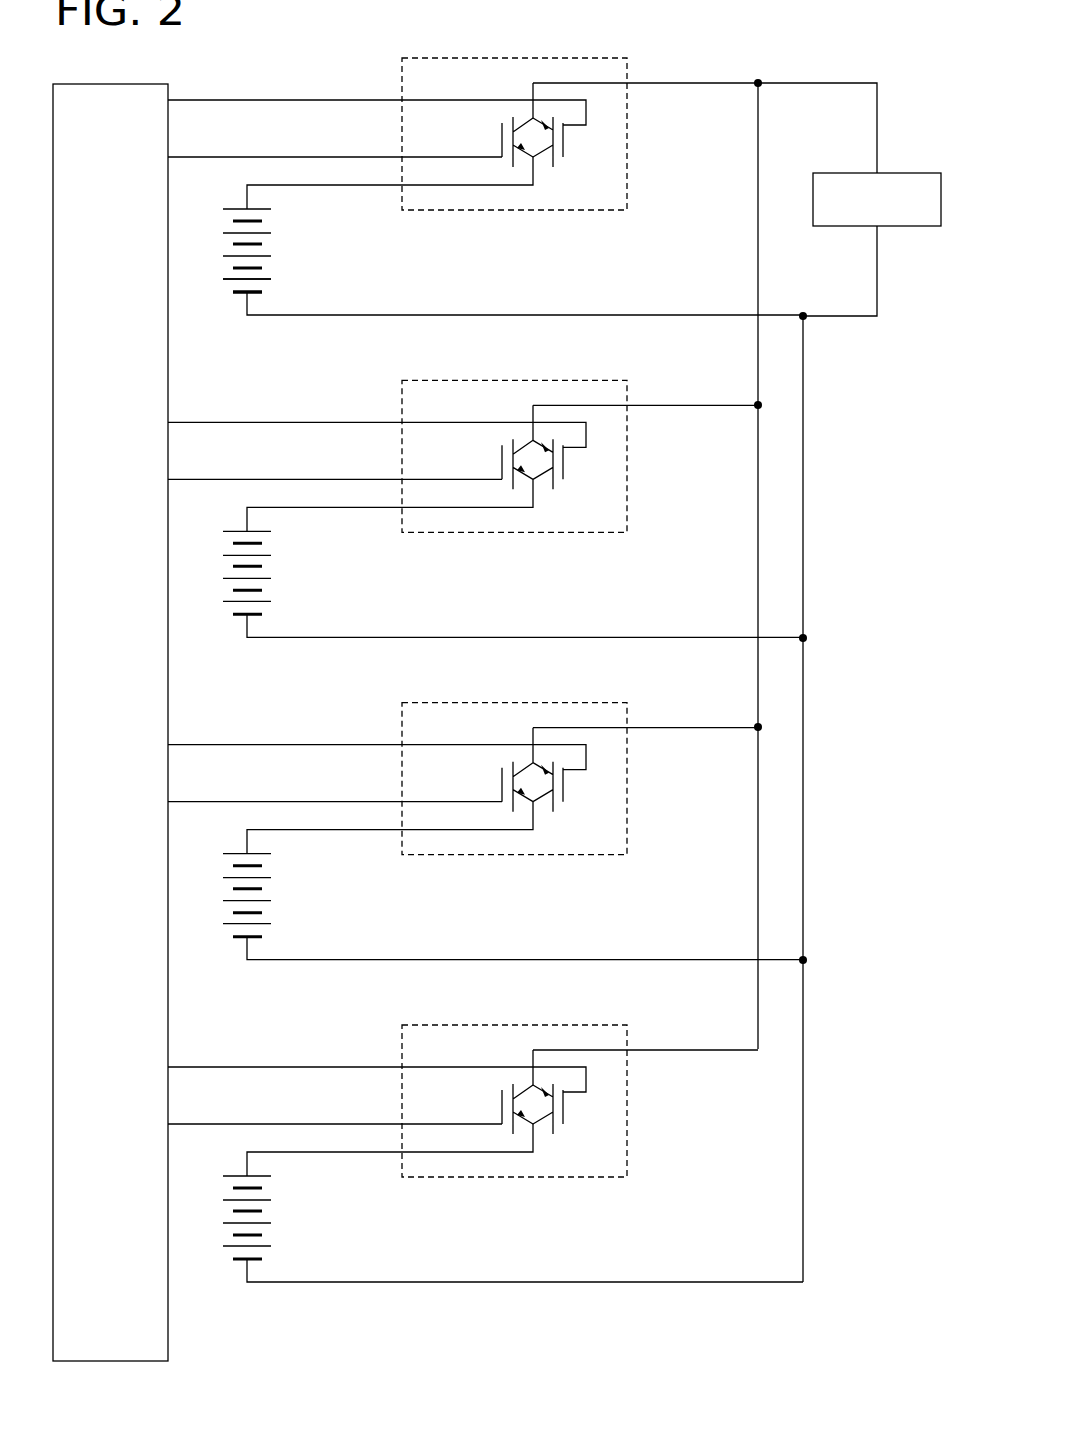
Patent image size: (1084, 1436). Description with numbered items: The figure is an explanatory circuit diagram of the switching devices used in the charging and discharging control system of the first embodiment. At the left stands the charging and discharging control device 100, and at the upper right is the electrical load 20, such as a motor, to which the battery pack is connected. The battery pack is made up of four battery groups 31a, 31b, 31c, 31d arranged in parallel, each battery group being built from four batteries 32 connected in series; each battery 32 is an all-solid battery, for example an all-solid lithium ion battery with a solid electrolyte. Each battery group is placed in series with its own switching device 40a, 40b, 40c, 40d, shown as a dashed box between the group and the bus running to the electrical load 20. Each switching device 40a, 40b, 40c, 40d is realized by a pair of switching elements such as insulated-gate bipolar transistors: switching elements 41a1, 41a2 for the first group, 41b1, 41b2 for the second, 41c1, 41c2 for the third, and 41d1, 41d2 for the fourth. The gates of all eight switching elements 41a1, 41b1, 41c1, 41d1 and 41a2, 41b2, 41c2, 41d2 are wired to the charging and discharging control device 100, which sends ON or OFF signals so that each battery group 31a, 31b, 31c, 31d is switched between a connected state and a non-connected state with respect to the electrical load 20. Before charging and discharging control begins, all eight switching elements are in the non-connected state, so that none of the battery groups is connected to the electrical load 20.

The charging and discharging control device 100 is at (100, 84).
The electrical load 20 is at (900, 173).
The battery 32 is at (218, 276).
The battery group 31a is at (278, 263).
The battery group 31b is at (274, 566).
The battery group 31c is at (274, 889).
The battery group 31d is at (274, 1211).
The switching device 40a is at (527, 58).
The switching device 40b is at (514, 441).
The switching device 40c is at (514, 764).
The switching device 40d is at (514, 1086).
The switching element 41a1 is at (500, 137).
The switching element 41a2 is at (568, 137).
The switching element 41b1 is at (482, 461).
The switching element 41b2 is at (587, 487).
The switching element 41c1 is at (482, 784).
The switching element 41c2 is at (587, 810).
The switching element 41d1 is at (482, 1106).
The switching element 41d2 is at (587, 1132).